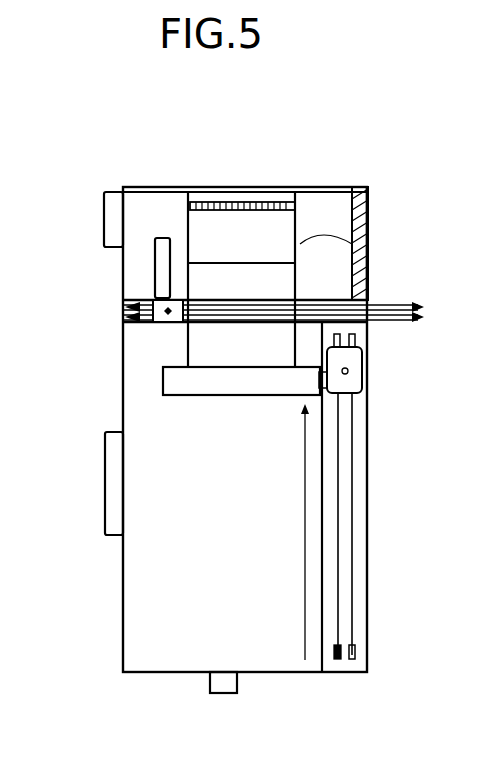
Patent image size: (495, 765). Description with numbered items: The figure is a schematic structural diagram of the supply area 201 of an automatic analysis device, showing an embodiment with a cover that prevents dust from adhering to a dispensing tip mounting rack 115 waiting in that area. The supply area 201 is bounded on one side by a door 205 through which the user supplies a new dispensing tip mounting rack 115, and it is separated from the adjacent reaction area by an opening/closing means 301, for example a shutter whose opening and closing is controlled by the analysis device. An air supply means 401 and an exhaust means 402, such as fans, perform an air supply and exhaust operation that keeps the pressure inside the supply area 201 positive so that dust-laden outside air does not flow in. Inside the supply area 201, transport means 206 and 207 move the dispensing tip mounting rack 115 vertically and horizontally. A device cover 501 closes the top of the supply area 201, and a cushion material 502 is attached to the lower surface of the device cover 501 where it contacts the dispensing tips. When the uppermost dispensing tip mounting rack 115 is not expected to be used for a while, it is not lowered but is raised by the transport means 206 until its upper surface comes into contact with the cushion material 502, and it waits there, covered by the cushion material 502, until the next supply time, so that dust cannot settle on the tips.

The supply area 201 is at (138, 198).
The air supply means 401 is at (102, 208).
The cushion material 502 is at (233, 197).
The device cover 501 is at (315, 186).
The opening/closing means 301 is at (363, 187).
The dispensing tip mounting rack 115 is at (365, 250).
The transport means 207 is at (153, 283).
The transport means 206 is at (163, 378).
The door 205 is at (110, 538).
The exhaust means 402 is at (208, 698).